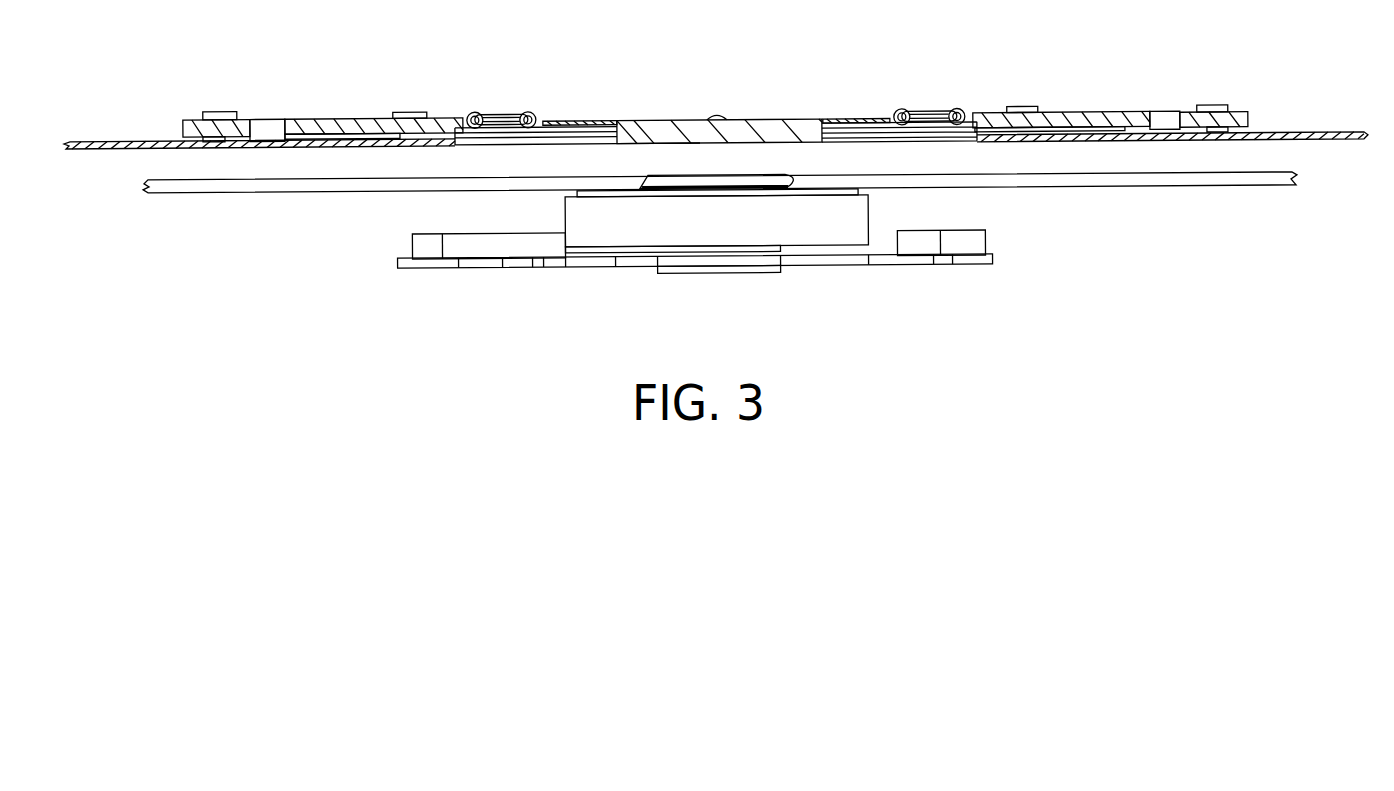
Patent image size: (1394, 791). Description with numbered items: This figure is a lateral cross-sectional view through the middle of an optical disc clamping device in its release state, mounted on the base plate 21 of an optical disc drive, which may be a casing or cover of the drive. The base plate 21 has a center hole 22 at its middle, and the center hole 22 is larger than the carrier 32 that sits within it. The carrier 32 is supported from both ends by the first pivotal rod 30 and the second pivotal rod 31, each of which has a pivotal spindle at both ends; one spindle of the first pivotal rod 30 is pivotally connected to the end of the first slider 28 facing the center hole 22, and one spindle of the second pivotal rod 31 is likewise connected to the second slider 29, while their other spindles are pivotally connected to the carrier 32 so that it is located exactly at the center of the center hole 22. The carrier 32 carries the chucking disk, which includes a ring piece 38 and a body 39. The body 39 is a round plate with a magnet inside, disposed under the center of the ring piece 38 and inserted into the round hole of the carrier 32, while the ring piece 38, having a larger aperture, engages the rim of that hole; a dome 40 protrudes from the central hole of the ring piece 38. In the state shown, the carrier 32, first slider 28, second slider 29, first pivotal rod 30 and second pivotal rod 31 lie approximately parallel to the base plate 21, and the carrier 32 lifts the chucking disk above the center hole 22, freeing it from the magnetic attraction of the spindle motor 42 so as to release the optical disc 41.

The base plate 21 is at (1332, 132).
The center hole 22 is at (912, 143).
The first slider 28 is at (1120, 112).
The second slider 29 is at (313, 118).
The first pivotal rod 30 is at (945, 110).
The second pivotal rod 31 is at (497, 110).
The carrier 32 is at (888, 118).
The ring piece 38 is at (590, 120).
The body 39 is at (632, 143).
The dome 40 is at (716, 116).
The optical disc 41 is at (1163, 188).
The spindle motor 42 is at (828, 248).